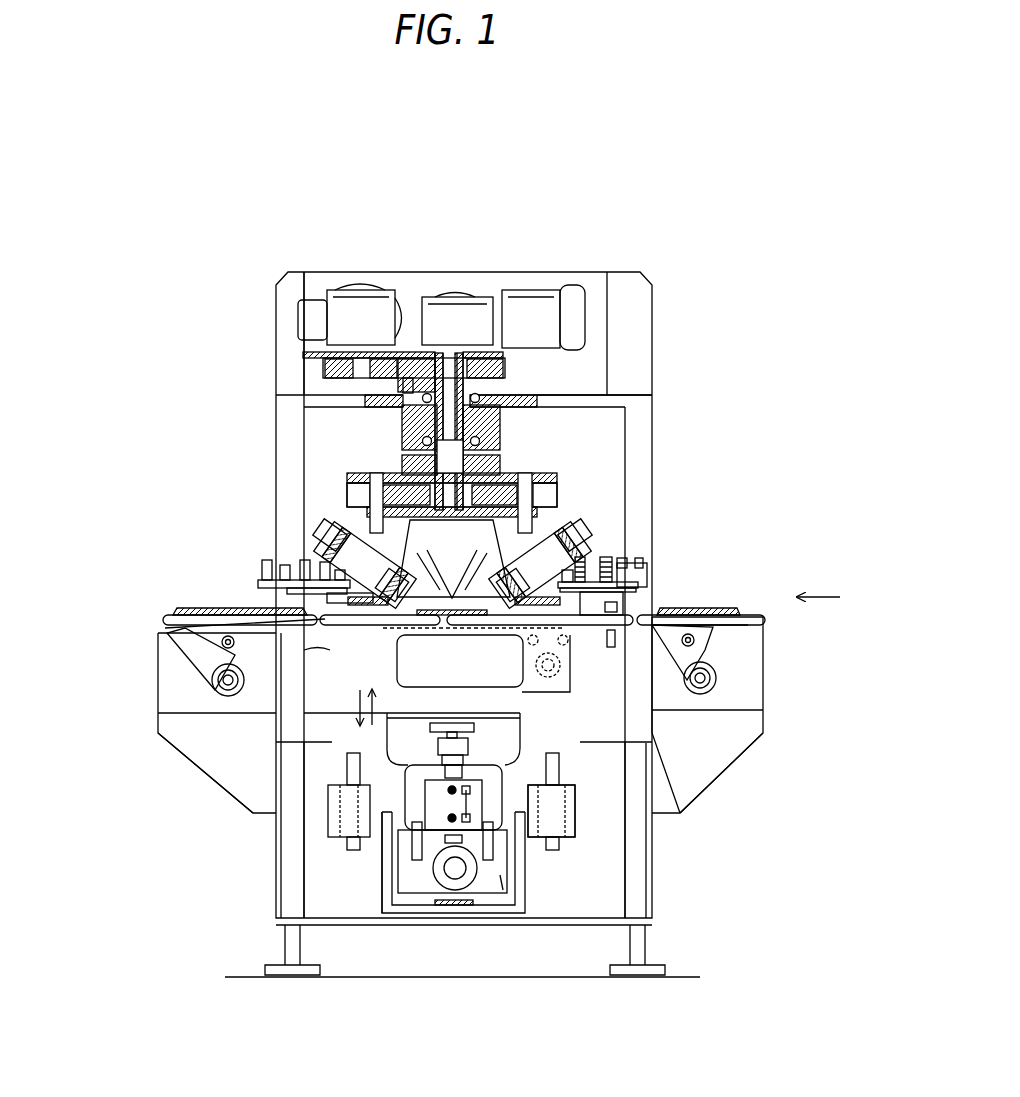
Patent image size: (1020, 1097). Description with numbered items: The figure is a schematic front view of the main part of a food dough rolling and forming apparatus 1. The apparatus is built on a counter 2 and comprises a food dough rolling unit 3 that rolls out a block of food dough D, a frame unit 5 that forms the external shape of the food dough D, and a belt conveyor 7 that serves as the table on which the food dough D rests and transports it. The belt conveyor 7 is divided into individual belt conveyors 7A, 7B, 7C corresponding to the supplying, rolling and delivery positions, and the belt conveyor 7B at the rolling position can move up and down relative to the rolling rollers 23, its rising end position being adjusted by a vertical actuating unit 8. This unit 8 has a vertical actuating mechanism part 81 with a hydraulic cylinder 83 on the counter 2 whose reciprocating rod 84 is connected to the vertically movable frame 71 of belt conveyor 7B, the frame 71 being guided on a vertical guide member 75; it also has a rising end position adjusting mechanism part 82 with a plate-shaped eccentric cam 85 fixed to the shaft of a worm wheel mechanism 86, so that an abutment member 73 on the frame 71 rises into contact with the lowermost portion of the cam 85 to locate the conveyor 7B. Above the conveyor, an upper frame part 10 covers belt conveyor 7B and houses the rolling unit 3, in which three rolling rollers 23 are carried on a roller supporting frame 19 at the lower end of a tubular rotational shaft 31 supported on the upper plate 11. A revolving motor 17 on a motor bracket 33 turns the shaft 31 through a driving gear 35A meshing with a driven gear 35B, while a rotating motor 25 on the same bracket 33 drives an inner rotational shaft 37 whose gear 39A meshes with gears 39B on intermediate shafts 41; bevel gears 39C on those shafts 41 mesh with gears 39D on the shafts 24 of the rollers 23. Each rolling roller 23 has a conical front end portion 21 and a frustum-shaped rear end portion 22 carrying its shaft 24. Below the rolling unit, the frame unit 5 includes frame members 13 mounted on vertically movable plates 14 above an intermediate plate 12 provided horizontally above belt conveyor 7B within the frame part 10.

The food dough rolling and forming apparatus 1 is at (525, 268).
The counter 2 is at (193, 748).
The food dough rolling unit 3 is at (388, 433).
The frame unit 5 is at (662, 549).
The belt conveyor 7 is at (739, 636).
The belt conveyor 7A is at (713, 628).
The belt conveyor 7B is at (373, 603).
The belt conveyor 7C is at (190, 658).
The vertical actuating unit 8 is at (587, 861).
The upper frame part 10 is at (665, 383).
The upper plate 11 is at (601, 399).
The intermediate plate 12 is at (617, 595).
The frame member 13 is at (302, 649).
The vertically movable plate 14 is at (300, 594).
The revolving motor 17 is at (362, 310).
The roller supporting frame 19 is at (560, 498).
The front end portion 21 is at (452, 603).
The rear end portion 22 is at (432, 592).
The rolling roller 23 is at (427, 568).
The shaft 24 is at (337, 565).
The rotating motor 25 is at (450, 307).
The tubular rotational shaft 31 is at (601, 368).
The motor bracket 33 is at (323, 363).
The driving gear 35A is at (390, 465).
The driven gear 35B is at (560, 385).
The rotational shaft 37 is at (452, 360).
The gear 39A is at (347, 477).
The gear 39B is at (343, 518).
The gear 39C is at (340, 545).
The gear 39D is at (348, 535).
The intermediate shaft 41 is at (345, 498).
The vertically movable frame 71 is at (575, 818).
The abutment member 73 is at (480, 902).
The vertical guide member 75 is at (353, 850).
The vertical actuating mechanism part 81 is at (496, 801).
The rising end position adjusting mechanism part 82 is at (488, 876).
The hydraulic cylinder 83 is at (447, 803).
The reciprocating rod 84 is at (447, 748).
The eccentric cam 85 is at (435, 843).
The worm wheel mechanism 86 is at (445, 882).
The food dough D is at (183, 604).